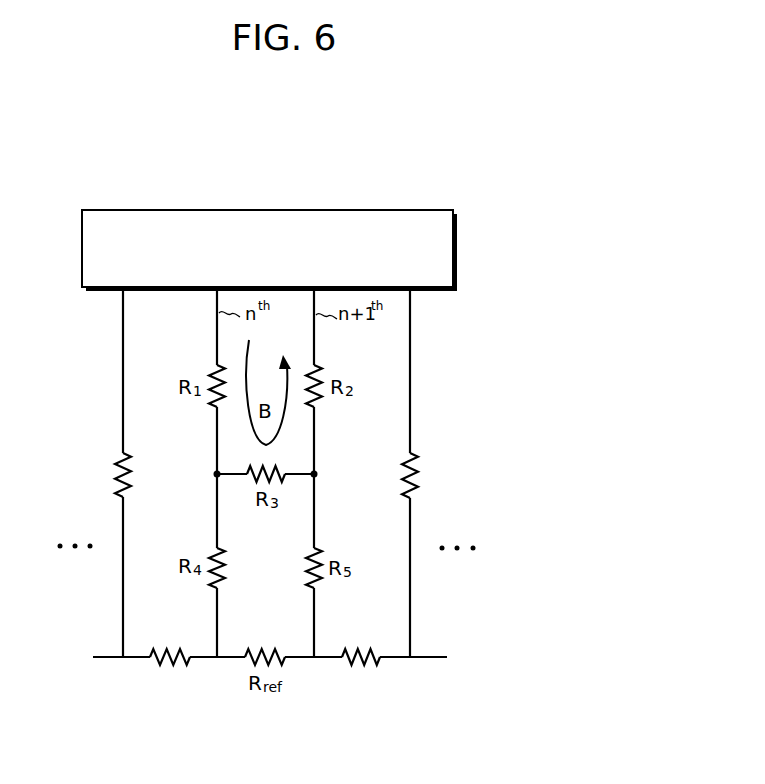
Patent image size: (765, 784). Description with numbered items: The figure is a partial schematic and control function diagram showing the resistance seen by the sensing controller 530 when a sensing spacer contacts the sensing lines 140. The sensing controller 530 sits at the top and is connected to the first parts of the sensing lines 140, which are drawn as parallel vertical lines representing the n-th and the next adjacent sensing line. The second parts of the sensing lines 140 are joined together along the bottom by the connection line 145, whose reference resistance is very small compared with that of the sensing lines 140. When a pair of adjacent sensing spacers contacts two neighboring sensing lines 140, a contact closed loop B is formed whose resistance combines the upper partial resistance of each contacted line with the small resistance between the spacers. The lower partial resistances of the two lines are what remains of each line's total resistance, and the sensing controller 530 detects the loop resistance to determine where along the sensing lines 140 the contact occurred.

The sensing controller 530 is at (316, 210).
The sensing lines 140 is at (217, 333).
The connection line 145 is at (435, 658).